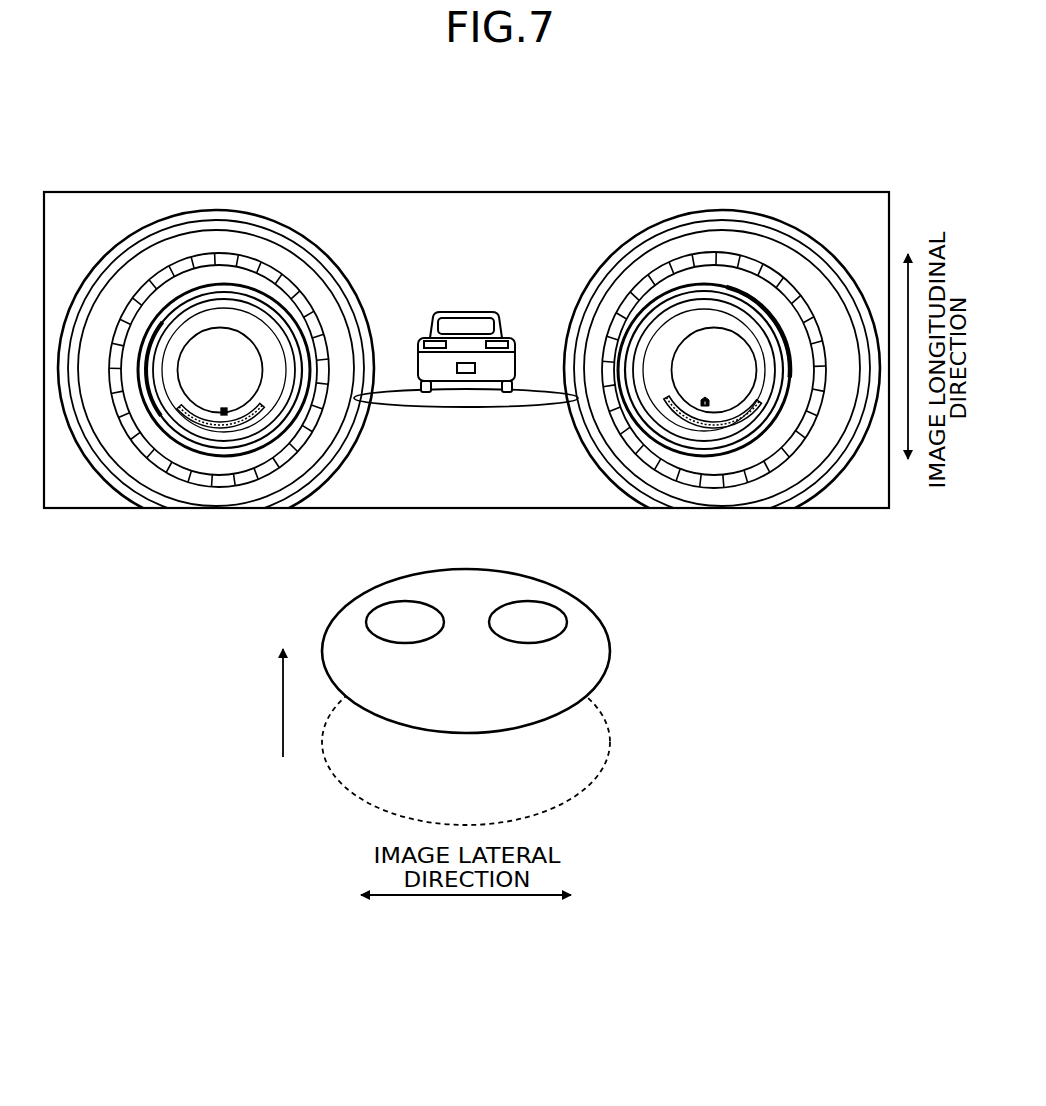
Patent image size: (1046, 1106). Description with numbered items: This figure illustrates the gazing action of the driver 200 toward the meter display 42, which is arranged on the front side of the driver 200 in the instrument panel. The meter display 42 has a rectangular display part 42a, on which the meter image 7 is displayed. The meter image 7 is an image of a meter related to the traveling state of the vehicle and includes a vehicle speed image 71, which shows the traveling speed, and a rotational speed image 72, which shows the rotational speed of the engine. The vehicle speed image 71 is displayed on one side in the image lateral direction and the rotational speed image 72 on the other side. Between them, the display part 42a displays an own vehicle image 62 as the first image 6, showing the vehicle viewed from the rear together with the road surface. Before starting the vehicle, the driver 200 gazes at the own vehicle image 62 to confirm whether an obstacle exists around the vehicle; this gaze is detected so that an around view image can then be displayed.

The meter display 42 is at (563, 188).
The display part 42a is at (462, 218).
The own vehicle image 62 is at (446, 306).
The first image 6 is at (445, 246).
The vehicle speed image 71 is at (254, 200).
The rotational speed image 72 is at (764, 202).
The meter image 7 is at (469, 313).
The driver 200 is at (612, 648).